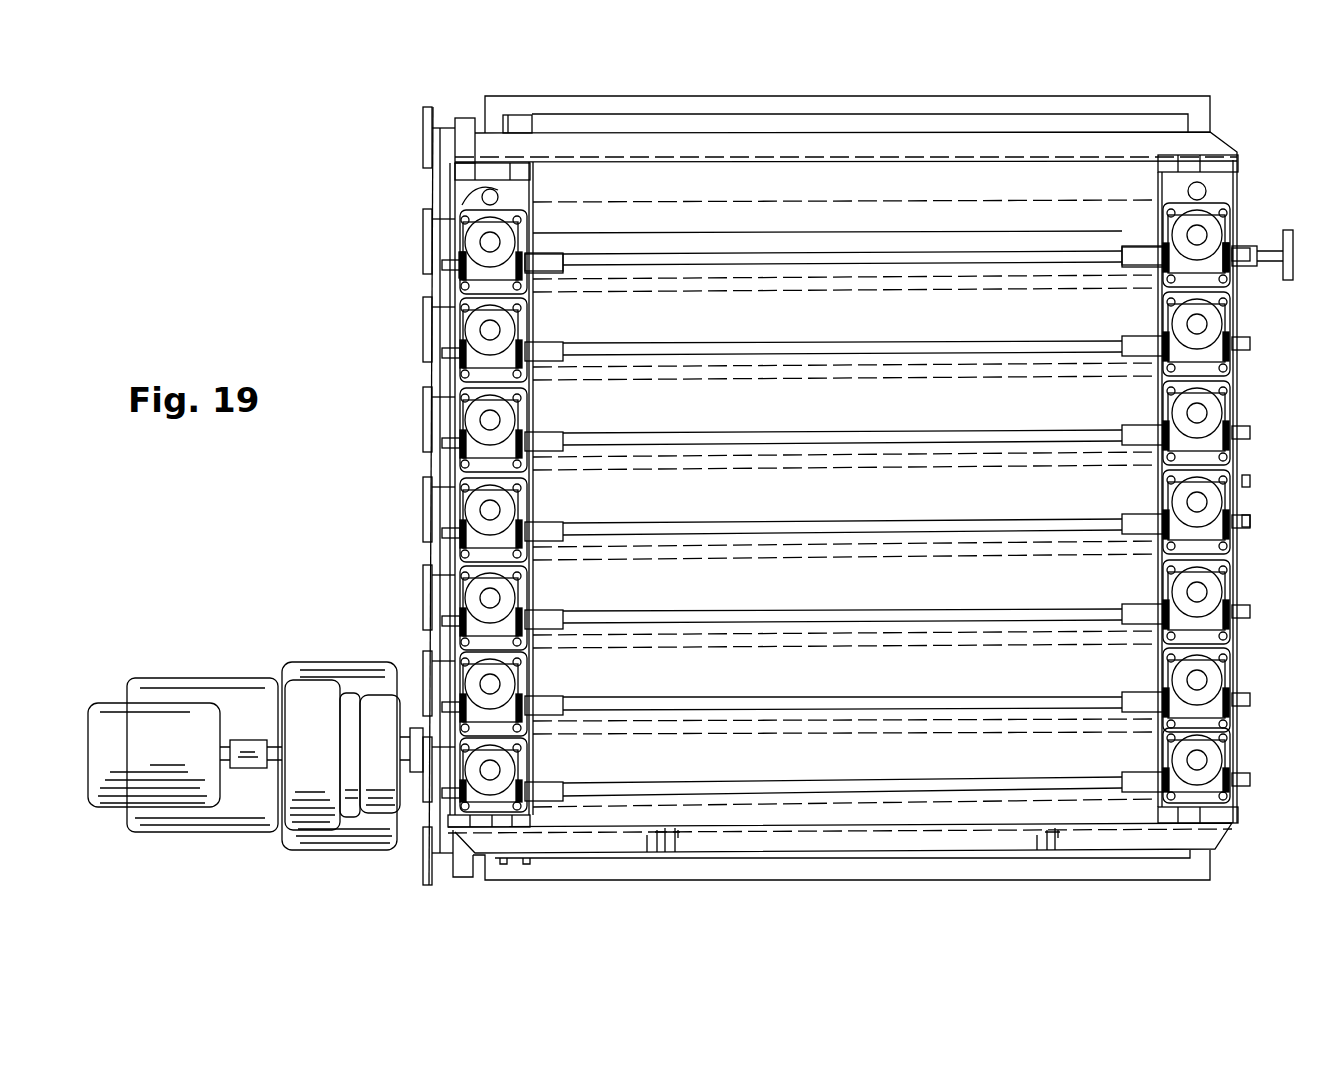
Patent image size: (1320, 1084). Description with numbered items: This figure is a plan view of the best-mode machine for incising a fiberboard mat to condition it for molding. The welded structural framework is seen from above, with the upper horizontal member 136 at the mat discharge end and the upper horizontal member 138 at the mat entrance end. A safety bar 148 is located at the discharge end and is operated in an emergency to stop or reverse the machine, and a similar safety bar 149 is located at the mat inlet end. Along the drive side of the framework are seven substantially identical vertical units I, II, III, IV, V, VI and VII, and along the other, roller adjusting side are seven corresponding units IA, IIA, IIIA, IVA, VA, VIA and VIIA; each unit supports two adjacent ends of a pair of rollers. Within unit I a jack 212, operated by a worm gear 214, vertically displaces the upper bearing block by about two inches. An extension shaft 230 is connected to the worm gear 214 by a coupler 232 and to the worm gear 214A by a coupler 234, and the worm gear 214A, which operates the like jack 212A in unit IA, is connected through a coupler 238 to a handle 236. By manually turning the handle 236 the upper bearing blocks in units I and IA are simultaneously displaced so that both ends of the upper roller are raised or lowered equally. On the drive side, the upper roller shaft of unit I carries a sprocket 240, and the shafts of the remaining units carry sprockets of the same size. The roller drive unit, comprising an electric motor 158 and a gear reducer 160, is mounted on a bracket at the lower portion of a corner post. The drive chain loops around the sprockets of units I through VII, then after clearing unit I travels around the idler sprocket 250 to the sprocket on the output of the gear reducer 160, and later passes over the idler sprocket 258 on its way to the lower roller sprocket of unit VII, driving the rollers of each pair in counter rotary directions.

The upper horizontal member 136 is at (1195, 832).
The upper horizontal member 138 is at (1195, 145).
The safety bar 148 is at (778, 882).
The safety bar 149 is at (822, 106).
The electric motor 158 is at (112, 718).
The gear reducer 160 is at (305, 698).
The jack 212 is at (470, 186).
The jack 212A is at (1226, 222).
The worm gear 214 is at (460, 274).
The worm gear 214A is at (1224, 272).
The extension shaft 230 is at (745, 258).
The coupler 232 is at (545, 258).
The coupler 234 is at (1132, 246).
The handle 236 is at (1290, 272).
The coupler 238 is at (1228, 266).
The sprocket 240 is at (423, 240).
The idler sprocket 250 is at (423, 118).
The idler sprocket 258 is at (423, 860).
The vertical unit I is at (536, 228).
The vertical unit IA is at (1156, 220).
The vertical unit II is at (536, 326).
The vertical unit IIA is at (1156, 315).
The vertical unit III is at (536, 414).
The vertical unit IIIA is at (1156, 407).
The vertical unit IV is at (536, 502).
The vertical unit IVA is at (1156, 494).
The vertical unit V is at (536, 590).
The vertical unit VA is at (1156, 583).
The vertical unit VI is at (536, 672).
The vertical unit VIA is at (1156, 665).
The vertical unit VII is at (536, 752).
The vertical unit VIIA is at (1156, 735).